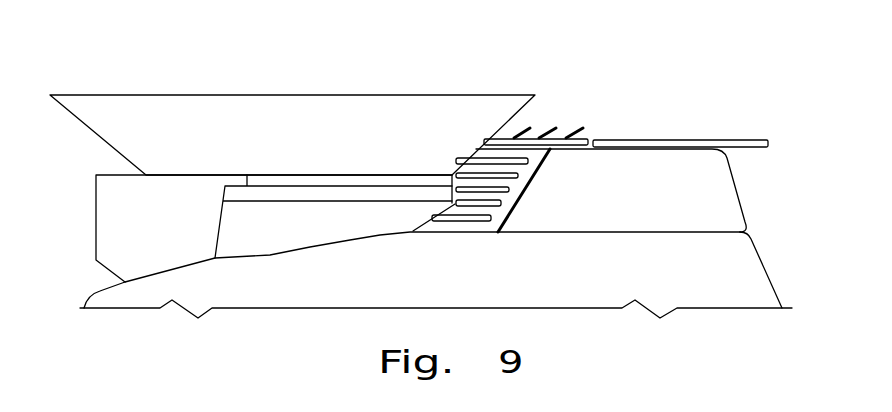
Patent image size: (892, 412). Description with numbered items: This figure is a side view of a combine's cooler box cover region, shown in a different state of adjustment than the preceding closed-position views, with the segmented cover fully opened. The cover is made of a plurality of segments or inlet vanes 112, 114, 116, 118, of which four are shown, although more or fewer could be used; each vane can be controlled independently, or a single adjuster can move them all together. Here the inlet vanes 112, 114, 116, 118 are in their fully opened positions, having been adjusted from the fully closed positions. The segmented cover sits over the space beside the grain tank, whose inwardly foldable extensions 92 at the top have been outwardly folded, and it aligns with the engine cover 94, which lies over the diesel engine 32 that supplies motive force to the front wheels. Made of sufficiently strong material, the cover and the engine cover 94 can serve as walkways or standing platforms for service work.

The diesel engine 32 is at (723, 198).
The inwardly foldable extensions 92 is at (432, 94).
The engine cover 94 is at (725, 138).
The inlet vane 112 is at (488, 139).
The inlet vane 114 is at (530, 128).
The inlet vane 116 is at (556, 128).
The inlet vane 118 is at (583, 128).